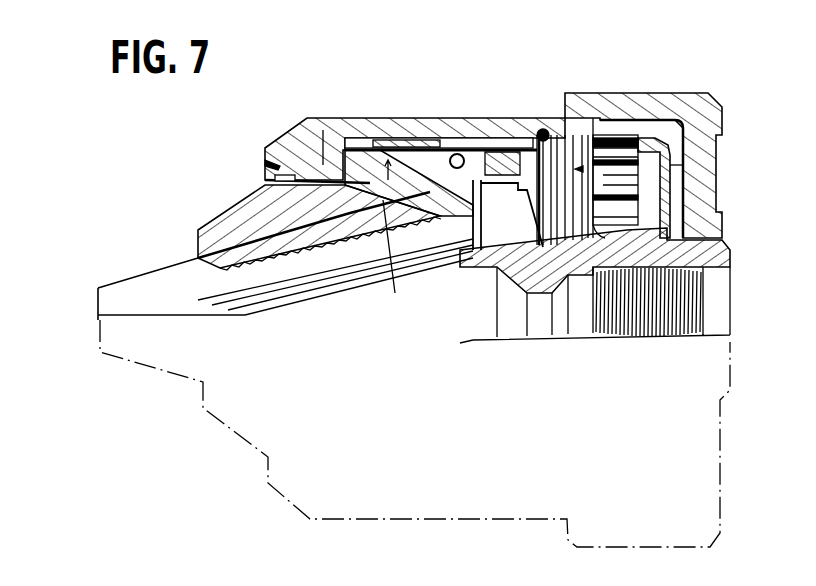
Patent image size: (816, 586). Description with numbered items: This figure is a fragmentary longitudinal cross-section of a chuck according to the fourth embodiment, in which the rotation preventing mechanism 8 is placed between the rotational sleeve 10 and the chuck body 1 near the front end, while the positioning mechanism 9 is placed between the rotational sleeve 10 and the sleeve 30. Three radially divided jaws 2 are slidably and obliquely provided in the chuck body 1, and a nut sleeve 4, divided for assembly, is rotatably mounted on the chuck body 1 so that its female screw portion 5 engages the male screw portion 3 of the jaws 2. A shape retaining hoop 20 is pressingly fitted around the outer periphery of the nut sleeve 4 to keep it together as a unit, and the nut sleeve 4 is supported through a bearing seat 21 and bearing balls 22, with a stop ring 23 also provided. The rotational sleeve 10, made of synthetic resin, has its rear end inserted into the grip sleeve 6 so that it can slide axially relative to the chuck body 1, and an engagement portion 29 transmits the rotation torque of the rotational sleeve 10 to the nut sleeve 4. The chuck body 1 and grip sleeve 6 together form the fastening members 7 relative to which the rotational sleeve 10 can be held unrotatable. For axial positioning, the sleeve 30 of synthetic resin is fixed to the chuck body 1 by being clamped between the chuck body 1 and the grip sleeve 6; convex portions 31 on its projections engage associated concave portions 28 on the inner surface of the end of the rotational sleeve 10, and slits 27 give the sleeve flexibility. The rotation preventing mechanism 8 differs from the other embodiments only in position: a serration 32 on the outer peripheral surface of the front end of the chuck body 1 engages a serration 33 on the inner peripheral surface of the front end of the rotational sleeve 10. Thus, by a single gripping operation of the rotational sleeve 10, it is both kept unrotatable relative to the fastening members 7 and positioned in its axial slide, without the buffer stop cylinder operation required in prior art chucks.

The chuck body 1 is at (220, 222).
The jaws 2 is at (118, 293).
The male screw portion 3 is at (220, 250).
The nut sleeve 4 is at (417, 150).
The female screw portion 5 is at (487, 263).
The grip sleeve 6 is at (710, 93).
The fastening members 7 is at (738, 256).
The rotation preventing mechanism 8 is at (267, 158).
The positioning mechanism 9 is at (583, 169).
The rotational sleeve 10 is at (292, 143).
The shape retaining hoop 20 is at (387, 142).
The bearing seat 21 is at (483, 137).
The bearing ball 22 is at (457, 153).
The stop ring 23 is at (530, 137).
The slits 27 is at (640, 128).
The concave portions 28 is at (563, 135).
The engagement portion 29 is at (397, 238).
The sleeve 30 is at (670, 163).
The convex portions 31 is at (600, 137).
The serration 32 is at (310, 177).
The serration 33 is at (263, 185).